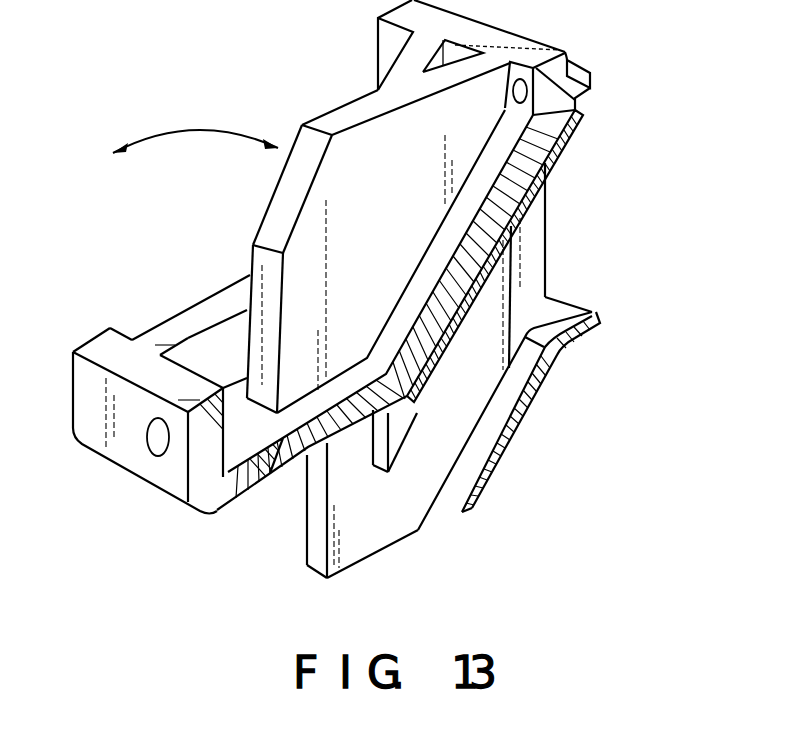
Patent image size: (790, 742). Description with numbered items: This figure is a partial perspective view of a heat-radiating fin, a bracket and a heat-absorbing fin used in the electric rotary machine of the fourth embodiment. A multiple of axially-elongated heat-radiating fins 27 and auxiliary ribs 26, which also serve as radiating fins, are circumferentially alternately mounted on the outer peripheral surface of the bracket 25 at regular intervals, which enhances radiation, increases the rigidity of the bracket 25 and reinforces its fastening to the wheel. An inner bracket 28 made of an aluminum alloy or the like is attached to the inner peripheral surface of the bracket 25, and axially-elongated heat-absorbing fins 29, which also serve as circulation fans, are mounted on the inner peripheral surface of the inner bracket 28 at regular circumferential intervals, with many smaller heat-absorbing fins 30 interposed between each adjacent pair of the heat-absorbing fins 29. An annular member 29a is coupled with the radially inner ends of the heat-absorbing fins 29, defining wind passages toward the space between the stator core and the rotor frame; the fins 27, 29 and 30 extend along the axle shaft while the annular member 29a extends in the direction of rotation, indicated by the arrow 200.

The arrow 200 is at (228, 130).
The bracket 25 is at (540, 126).
The auxiliary rib 26 is at (204, 318).
The heat-radiating fin 27 is at (335, 123).
The inner bracket 28 is at (523, 180).
The heat-absorbing fin 29 is at (418, 507).
The annular member 29a is at (537, 393).
The heat-absorbing fin 30 is at (434, 367).